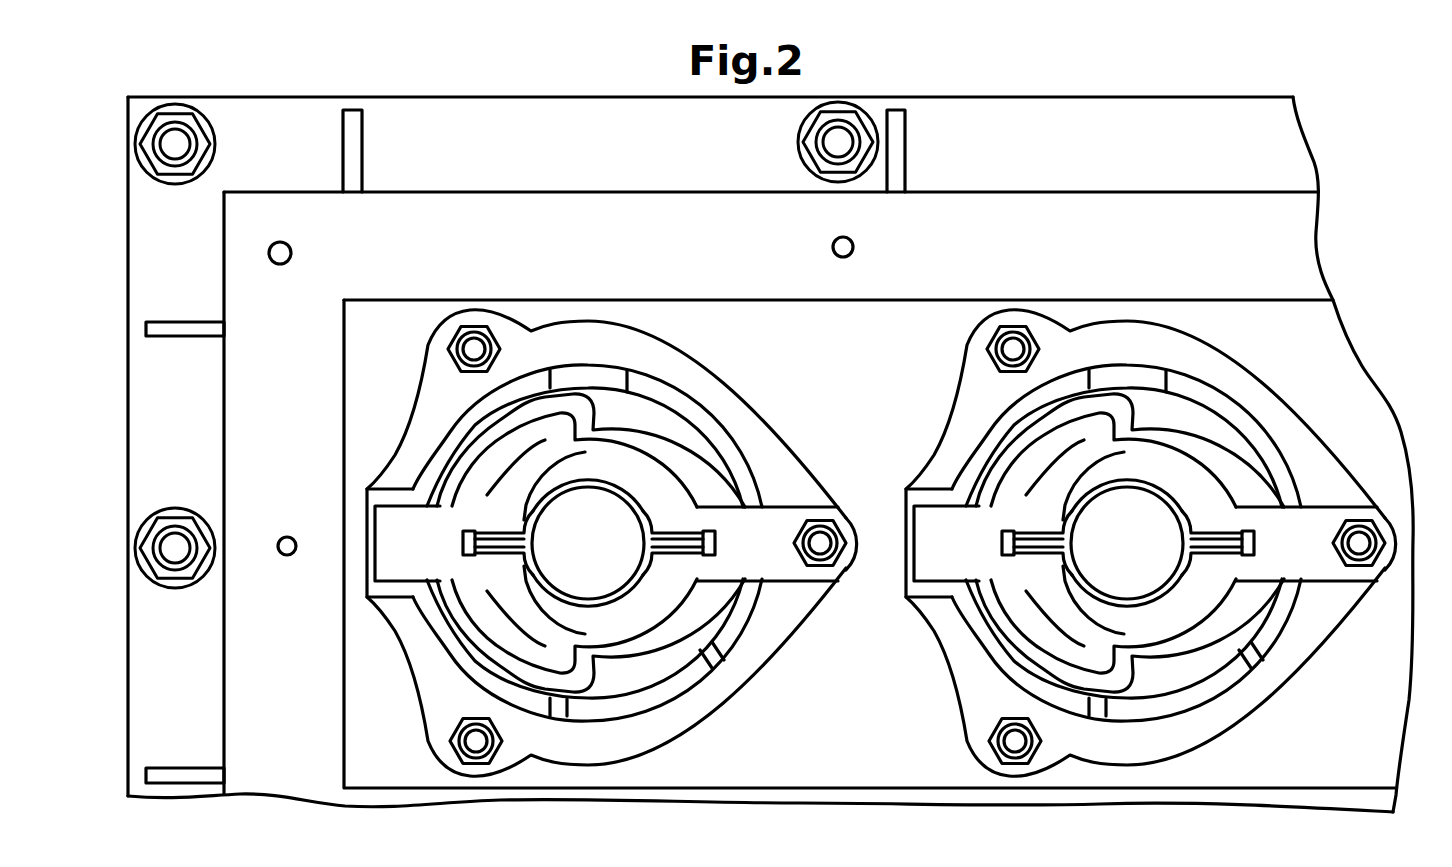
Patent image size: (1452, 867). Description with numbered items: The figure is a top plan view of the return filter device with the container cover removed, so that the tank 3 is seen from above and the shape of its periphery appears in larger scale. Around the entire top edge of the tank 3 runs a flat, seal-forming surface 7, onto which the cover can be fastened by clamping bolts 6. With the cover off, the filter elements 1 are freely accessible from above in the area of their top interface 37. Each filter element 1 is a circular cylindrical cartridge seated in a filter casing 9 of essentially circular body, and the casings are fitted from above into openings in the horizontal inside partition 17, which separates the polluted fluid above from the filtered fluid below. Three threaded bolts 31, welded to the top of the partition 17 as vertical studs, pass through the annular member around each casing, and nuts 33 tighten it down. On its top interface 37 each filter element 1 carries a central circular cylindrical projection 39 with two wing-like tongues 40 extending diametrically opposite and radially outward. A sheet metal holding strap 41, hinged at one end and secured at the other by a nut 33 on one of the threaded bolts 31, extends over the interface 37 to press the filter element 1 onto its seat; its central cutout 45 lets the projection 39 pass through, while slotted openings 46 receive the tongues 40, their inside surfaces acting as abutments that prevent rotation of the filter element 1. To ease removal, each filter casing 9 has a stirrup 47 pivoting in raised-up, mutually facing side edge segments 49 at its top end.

The filter element 1 is at (566, 545).
The tank 3 is at (219, 745).
The clamping bolts 6 is at (282, 265).
The seal-forming surface 7 is at (1251, 267).
The filter casing 9 is at (1345, 612).
The inside partition 17 is at (753, 747).
The threaded bolts 31 is at (474, 349).
The nuts 33 is at (450, 360).
The top interface 37 is at (607, 643).
The projection 39 is at (677, 527).
The tongues 40 is at (505, 543).
The holding strap 41 is at (587, 470).
The cutout 45 is at (610, 523).
The slotted openings 46 is at (495, 553).
The stirrup 47 is at (520, 427).
The side edge segments 49 is at (568, 373).